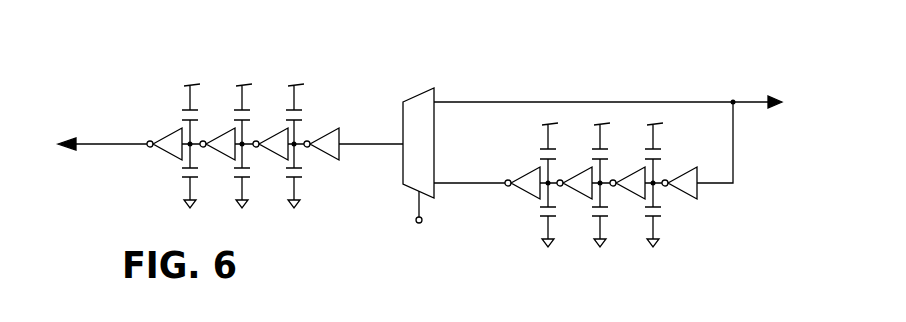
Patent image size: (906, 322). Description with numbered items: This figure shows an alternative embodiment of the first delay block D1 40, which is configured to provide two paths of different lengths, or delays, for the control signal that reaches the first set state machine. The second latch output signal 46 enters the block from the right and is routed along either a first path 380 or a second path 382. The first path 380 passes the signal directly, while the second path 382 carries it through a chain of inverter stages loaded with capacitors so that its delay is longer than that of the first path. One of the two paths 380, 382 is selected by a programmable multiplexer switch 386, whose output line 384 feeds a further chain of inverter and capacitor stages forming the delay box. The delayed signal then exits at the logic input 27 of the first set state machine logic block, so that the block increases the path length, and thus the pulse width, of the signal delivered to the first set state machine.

The first delay block D1 40 is at (87, 64).
The logic input 27 is at (92, 144).
The mux output line to delay box 384 is at (350, 143).
The programmable multiplexer switch 386 is at (434, 89).
The first path 380 is at (722, 102).
The second latch output signal 46 is at (780, 95).
The second path 382 is at (718, 184).